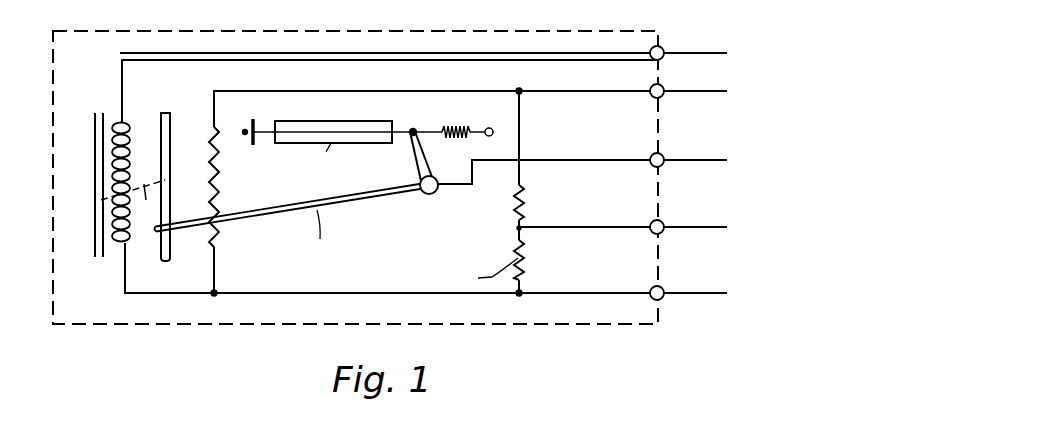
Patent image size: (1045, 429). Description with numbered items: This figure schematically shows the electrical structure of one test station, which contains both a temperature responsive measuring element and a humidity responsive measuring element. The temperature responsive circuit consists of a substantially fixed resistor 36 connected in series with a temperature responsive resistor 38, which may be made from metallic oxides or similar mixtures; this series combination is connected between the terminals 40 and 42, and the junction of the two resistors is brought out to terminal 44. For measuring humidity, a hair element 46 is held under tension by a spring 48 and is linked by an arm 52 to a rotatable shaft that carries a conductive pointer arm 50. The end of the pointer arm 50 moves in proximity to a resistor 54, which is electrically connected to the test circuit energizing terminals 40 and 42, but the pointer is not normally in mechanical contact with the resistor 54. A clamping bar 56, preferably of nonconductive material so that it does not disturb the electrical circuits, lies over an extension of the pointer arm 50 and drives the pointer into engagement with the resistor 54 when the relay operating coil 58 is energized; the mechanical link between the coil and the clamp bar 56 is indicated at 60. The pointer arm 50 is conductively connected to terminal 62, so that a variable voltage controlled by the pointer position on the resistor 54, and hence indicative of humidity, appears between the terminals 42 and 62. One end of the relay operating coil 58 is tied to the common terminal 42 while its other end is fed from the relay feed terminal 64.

The fixed resistor 36 is at (537, 196).
The temperature responsive resistor 38 is at (537, 256).
The terminal 40 is at (663, 86).
The common terminal 42 is at (663, 288).
The terminal 44 is at (663, 222).
The hair element 46 is at (326, 125).
The spring 48 is at (451, 127).
The conductive pointer arm 50 is at (357, 203).
The arm 52 is at (418, 157).
The resistor 54 is at (222, 170).
The clamping bar 56 is at (159, 130).
The relay operating coil 58 is at (114, 122).
The mechanical link 60 is at (133, 200).
The terminal 62 is at (663, 155).
The relay feed terminal 64 is at (663, 48).